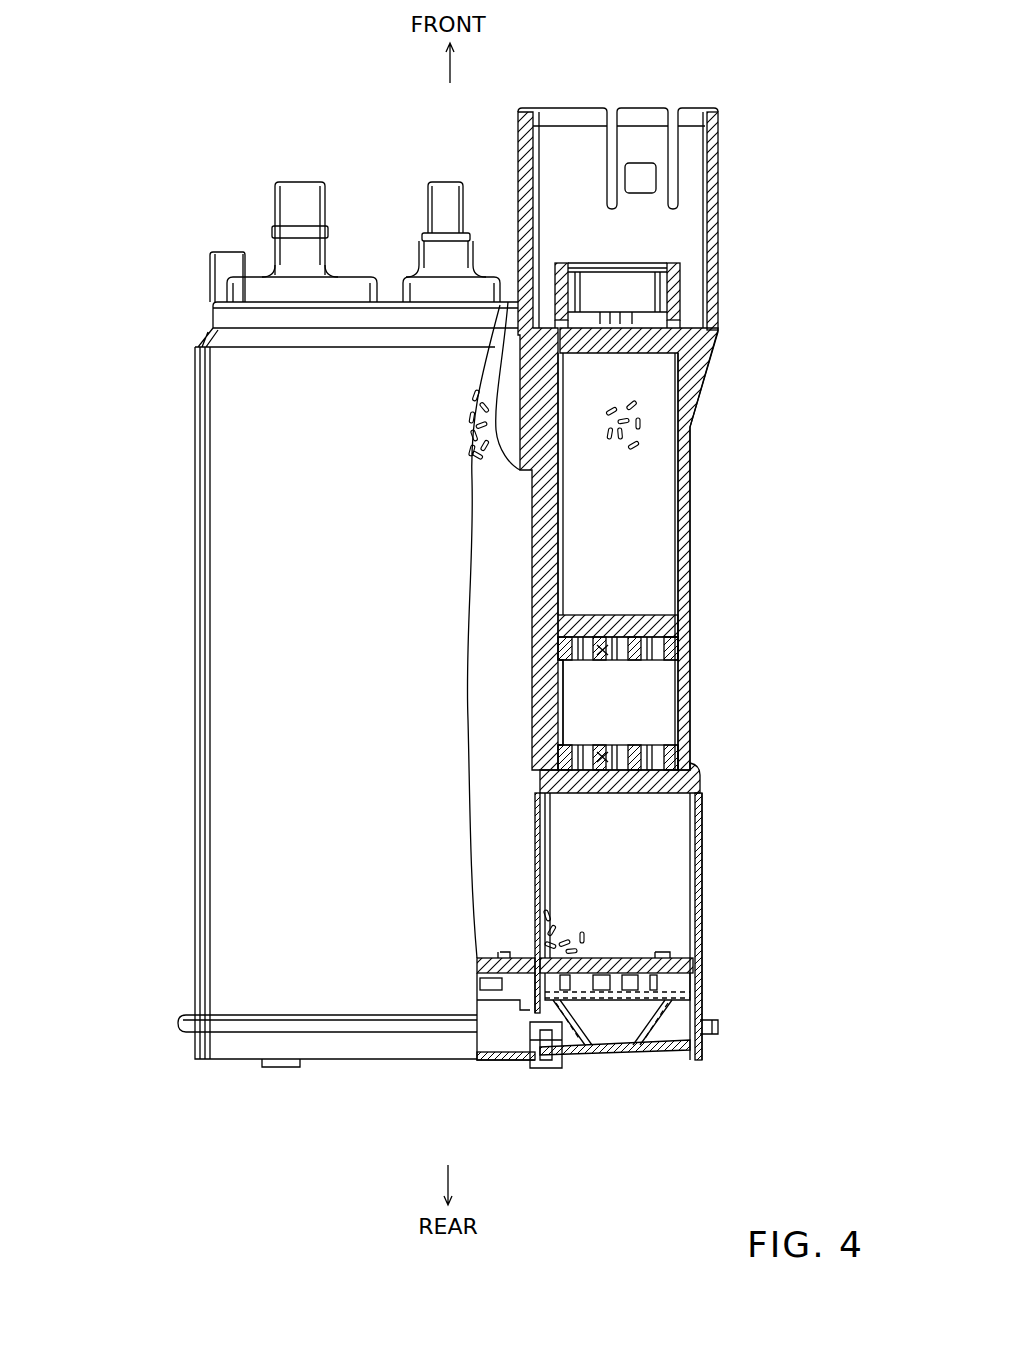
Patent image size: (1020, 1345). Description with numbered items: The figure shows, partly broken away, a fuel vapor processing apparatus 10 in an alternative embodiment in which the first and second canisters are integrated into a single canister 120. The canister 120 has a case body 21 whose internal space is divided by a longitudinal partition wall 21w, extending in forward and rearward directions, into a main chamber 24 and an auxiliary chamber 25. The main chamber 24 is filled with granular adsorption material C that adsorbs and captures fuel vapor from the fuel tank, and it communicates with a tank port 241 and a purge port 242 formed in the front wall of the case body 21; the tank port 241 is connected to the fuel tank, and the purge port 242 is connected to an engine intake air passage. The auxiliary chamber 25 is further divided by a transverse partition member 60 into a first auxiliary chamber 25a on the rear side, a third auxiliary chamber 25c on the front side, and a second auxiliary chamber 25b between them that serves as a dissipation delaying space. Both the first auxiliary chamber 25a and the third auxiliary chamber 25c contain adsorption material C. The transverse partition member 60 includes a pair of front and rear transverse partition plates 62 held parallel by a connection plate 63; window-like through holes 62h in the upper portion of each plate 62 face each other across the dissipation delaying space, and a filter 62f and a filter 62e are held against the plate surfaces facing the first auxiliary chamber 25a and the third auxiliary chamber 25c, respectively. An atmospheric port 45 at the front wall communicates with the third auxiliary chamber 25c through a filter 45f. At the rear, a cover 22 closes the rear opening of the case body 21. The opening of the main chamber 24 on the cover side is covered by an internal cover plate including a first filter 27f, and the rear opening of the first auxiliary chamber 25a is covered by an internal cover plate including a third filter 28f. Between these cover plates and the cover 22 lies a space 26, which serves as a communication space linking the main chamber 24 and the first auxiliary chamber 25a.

The fuel vapor processing apparatus 10 is at (618, 439).
The canister 120 is at (186, 549).
The case body 21 is at (193, 746).
The longitudinal partition wall 21w is at (540, 555).
The cover 22 is at (400, 1045).
The main chamber 24 is at (472, 520).
The tank port 241 is at (440, 208).
The purge port 242 is at (303, 205).
The auxiliary chamber 25 is at (665, 494).
The first auxiliary chamber 25a is at (640, 823).
The second auxiliary chamber 25b is at (650, 675).
The third auxiliary chamber 25c is at (645, 382).
The space 26 is at (500, 1033).
The first filter 27f is at (508, 950).
The third filter 28f is at (680, 963).
The atmospheric port 45 is at (673, 292).
The filter 45f is at (635, 342).
The transverse partition member 60 is at (645, 626).
The transverse partition plate 62 is at (672, 648).
The filter 62e is at (665, 628).
The filter 62f is at (660, 788).
The through hole 62h is at (605, 640).
The connection plate 63 is at (563, 690).
The adsorption material C is at (478, 435).